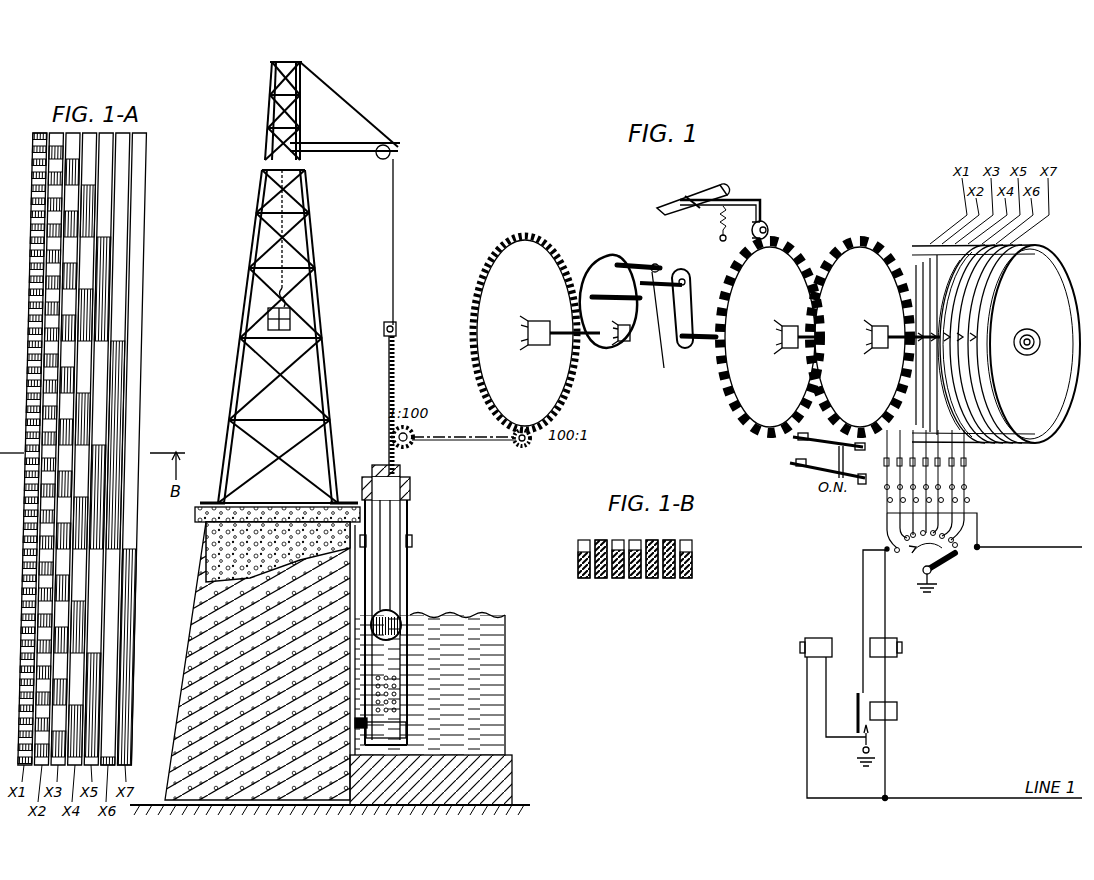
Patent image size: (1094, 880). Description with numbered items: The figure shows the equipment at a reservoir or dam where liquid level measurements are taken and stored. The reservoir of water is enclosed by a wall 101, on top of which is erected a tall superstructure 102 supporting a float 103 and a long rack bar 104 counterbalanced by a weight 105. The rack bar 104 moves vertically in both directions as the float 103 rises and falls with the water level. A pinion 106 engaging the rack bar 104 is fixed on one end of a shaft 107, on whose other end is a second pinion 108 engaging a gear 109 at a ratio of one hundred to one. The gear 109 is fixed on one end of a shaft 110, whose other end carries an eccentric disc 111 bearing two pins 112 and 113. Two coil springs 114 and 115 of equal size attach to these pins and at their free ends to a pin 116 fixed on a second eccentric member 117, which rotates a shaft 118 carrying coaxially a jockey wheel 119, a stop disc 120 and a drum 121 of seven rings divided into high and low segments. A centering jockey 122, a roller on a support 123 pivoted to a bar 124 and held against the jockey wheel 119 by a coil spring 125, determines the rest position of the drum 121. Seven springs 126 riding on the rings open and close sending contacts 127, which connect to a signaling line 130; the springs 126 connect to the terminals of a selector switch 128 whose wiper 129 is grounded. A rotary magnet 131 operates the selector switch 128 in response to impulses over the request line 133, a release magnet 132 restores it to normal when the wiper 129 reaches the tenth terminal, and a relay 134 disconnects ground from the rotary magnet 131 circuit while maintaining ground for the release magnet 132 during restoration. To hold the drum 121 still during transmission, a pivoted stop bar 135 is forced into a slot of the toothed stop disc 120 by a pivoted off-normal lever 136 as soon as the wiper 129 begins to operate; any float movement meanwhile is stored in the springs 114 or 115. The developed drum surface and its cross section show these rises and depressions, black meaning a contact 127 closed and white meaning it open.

The wall 101 is at (205, 623).
The superstructure 102 is at (306, 291).
The float 103 is at (398, 612).
The rack bar 104 is at (401, 378).
The weight 105 is at (292, 318).
The pinion 106 is at (407, 446).
The shaft 107 is at (448, 443).
The pinion 108 is at (527, 445).
The gear 109 is at (551, 248).
The shaft 110 is at (576, 346).
The eccentric disc 111 is at (623, 350).
The pin 112 is at (598, 258).
The pin 113 is at (628, 294).
The coil spring 114 is at (664, 354).
The coil spring 115 is at (657, 266).
The pin 116 is at (664, 280).
The second eccentric member 117 is at (682, 350).
The shaft 118 is at (701, 332).
The jockey wheel 119 is at (794, 254).
The stop disc 120 is at (876, 254).
The drum 121 is at (996, 344).
The centering jockey 122 is at (766, 222).
The support 123 is at (740, 198).
The bar 124 is at (708, 188).
The coil spring 125 is at (730, 236).
The springs 126 is at (880, 452).
The sending contacts 127 is at (890, 473).
The selector switch 128 is at (916, 554).
The wiper 129 is at (946, 560).
The signaling line 130 is at (992, 548).
The rotary magnet 131 is at (813, 638).
The release magnet 132 is at (896, 638).
The request line 133 is at (964, 798).
The relay 134 is at (896, 702).
The stop bar 135 is at (806, 440).
The off-normal lever 136 is at (806, 466).